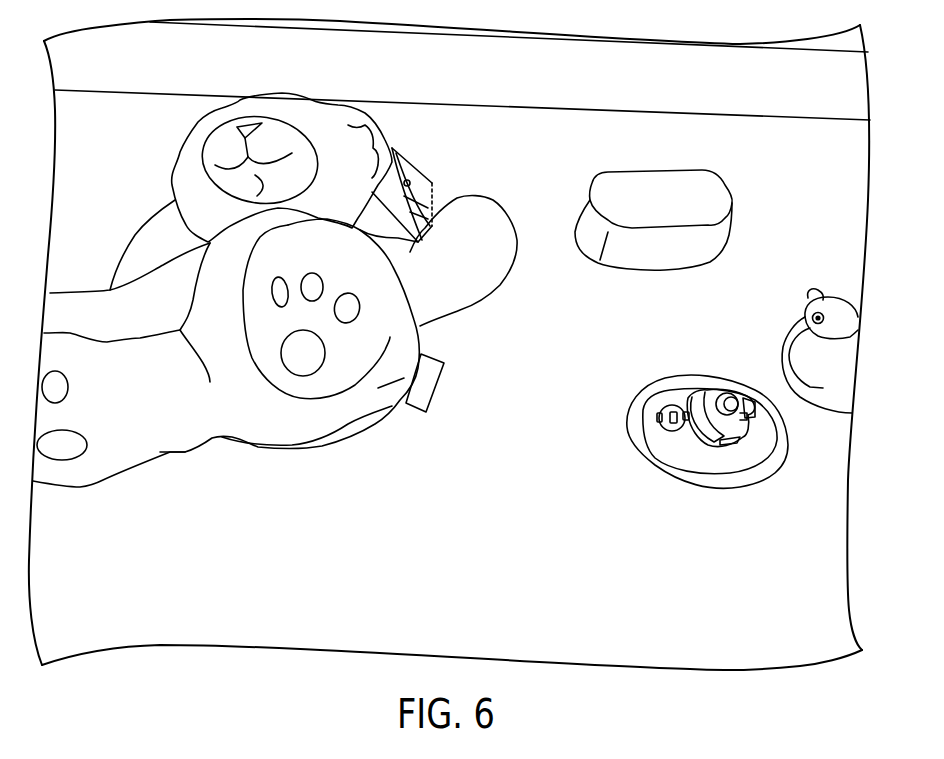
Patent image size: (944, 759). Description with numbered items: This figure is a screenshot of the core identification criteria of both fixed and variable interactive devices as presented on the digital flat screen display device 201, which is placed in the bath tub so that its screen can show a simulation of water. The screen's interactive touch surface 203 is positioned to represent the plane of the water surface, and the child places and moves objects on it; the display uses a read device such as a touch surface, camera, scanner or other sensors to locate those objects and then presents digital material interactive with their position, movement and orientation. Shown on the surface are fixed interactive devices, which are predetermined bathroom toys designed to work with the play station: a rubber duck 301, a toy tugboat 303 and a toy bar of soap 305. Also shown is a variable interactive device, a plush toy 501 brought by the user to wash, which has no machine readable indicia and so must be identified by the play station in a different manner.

The digital flat screen display device 201 is at (727, 90).
The interactive touch surface 203 is at (497, 494).
The rubber duck 301 is at (840, 298).
The toy tugboat 303 is at (654, 384).
The toy bar of soap 305 is at (643, 183).
The plush toy 501 is at (468, 207).